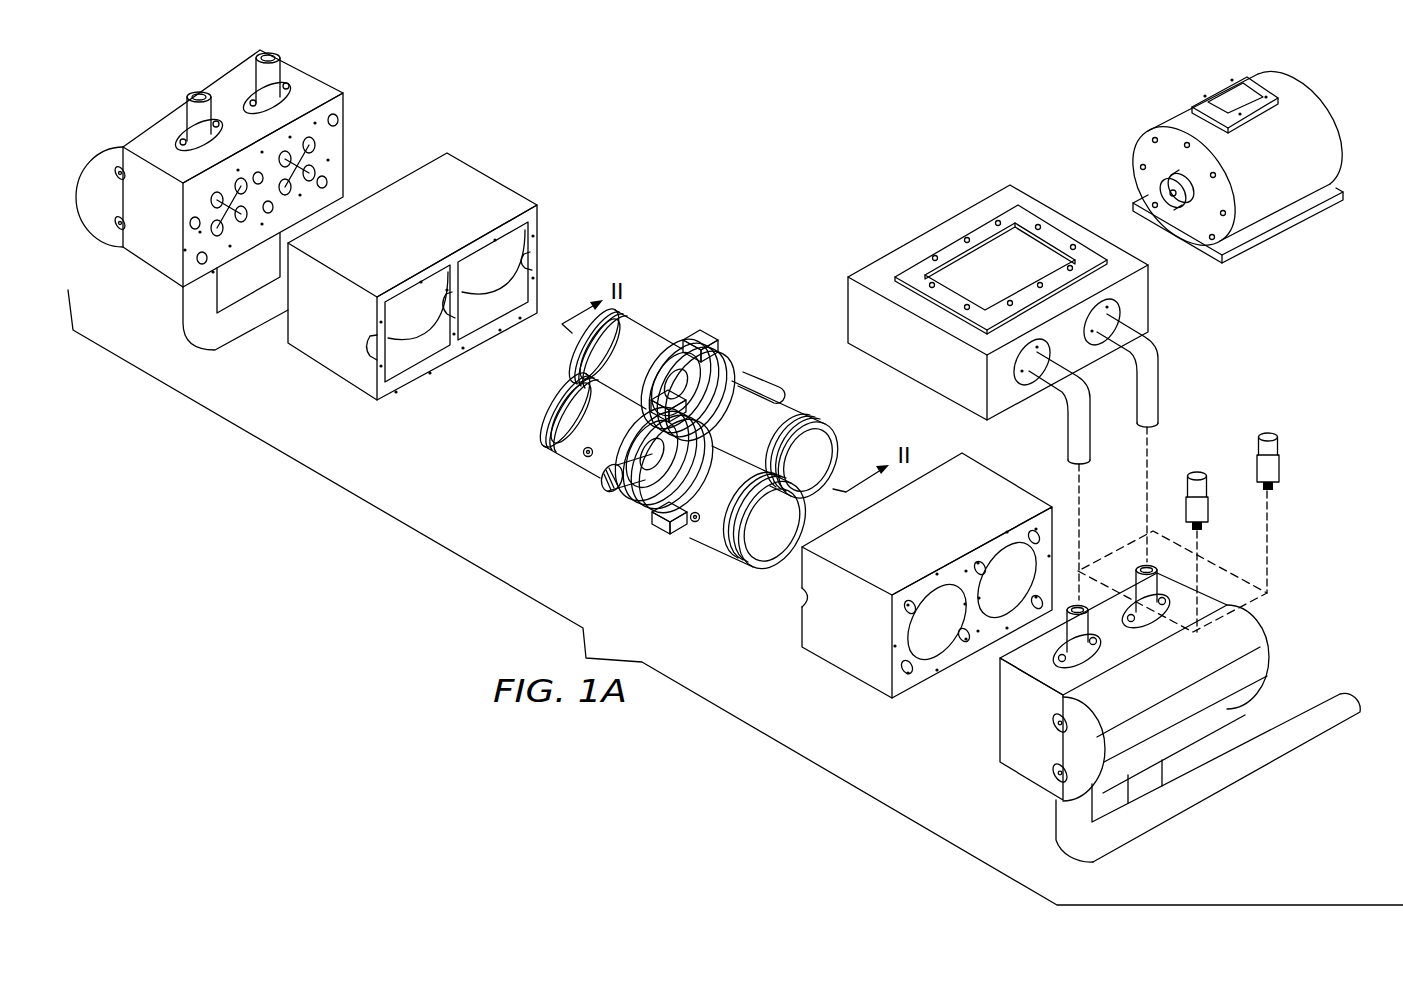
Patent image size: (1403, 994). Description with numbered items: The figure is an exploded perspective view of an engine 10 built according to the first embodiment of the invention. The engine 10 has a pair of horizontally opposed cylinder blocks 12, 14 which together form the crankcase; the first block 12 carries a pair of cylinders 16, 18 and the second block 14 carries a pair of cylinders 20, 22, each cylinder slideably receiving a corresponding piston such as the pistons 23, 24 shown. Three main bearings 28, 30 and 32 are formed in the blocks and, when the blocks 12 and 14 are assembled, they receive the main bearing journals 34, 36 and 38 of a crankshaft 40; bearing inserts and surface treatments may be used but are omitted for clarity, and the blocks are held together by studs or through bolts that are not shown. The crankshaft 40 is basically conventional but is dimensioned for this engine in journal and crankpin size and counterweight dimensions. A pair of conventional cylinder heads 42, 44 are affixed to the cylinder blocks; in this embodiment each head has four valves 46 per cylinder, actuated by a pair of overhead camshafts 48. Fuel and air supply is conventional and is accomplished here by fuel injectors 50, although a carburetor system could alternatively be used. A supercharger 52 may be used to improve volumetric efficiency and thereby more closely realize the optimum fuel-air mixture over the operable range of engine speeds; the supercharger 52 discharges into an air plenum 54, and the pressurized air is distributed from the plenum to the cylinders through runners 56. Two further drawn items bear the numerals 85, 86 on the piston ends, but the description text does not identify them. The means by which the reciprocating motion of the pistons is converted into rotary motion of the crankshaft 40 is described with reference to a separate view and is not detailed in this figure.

The engine 10 is at (698, 126).
The cylinder block 12 is at (548, 376).
The cylinder block 14 is at (925, 586).
The cylinder 16 is at (407, 317).
The cylinder 18 is at (478, 263).
The cylinder 20 is at (922, 626).
The cylinder 22 is at (992, 587).
The piston 23 is at (540, 407).
The piston 24 is at (573, 357).
The main bearing 28 is at (372, 352).
The main bearing 30 is at (467, 317).
The main bearing 32 is at (528, 257).
The main bearing journal 34 is at (643, 500).
The main bearing journal 36 is at (718, 373).
The main bearing journal 38 is at (787, 394).
The crankshaft 40 is at (594, 481).
The cylinder head 42 is at (313, 87).
The cylinder head 44 is at (1216, 598).
The valves 46 is at (327, 170).
The overhead camshaft 48 is at (112, 178).
The fuel injector 50 is at (1209, 492).
The supercharger 52 is at (1317, 117).
The air plenum 54 is at (1050, 217).
The runners 56 is at (1152, 372).
The piston head 85 is at (765, 535).
The piston head 86 is at (800, 476).